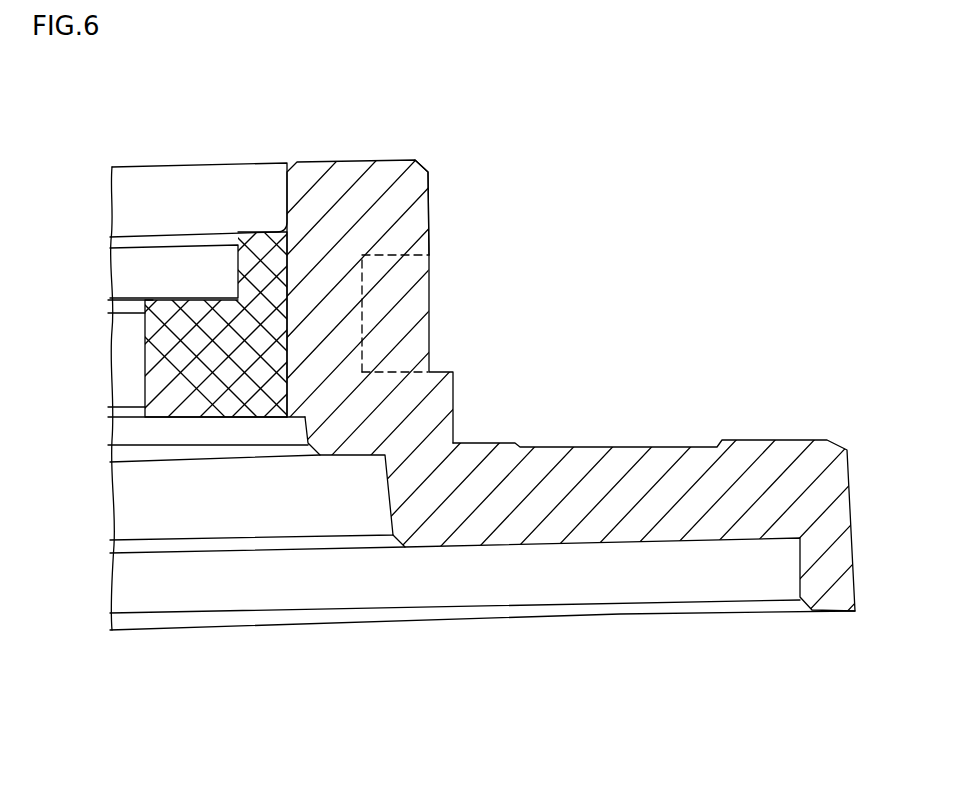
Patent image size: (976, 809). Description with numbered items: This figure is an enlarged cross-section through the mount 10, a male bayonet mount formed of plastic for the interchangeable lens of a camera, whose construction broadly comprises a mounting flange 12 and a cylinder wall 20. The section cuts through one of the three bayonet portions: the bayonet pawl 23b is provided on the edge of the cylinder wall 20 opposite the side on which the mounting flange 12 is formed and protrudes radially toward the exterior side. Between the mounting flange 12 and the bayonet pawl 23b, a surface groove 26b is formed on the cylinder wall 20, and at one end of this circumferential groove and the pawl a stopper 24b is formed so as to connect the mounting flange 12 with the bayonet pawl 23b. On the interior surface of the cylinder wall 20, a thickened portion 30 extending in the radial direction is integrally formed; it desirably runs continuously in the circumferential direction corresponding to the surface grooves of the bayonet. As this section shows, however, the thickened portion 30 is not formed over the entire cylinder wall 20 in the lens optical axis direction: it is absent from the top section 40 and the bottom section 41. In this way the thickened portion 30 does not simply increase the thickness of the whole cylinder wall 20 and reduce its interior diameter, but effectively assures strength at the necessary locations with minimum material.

The mount 10 is at (602, 353).
The mounting flange 12 is at (650, 445).
The cylinder wall 20 is at (340, 163).
The bayonet pawl 23b is at (403, 203).
The stopper 24b is at (412, 300).
The surface groove 26b is at (407, 347).
The thickened portion 30 is at (237, 368).
The top section 40 is at (225, 193).
The bottom section 41 is at (298, 513).